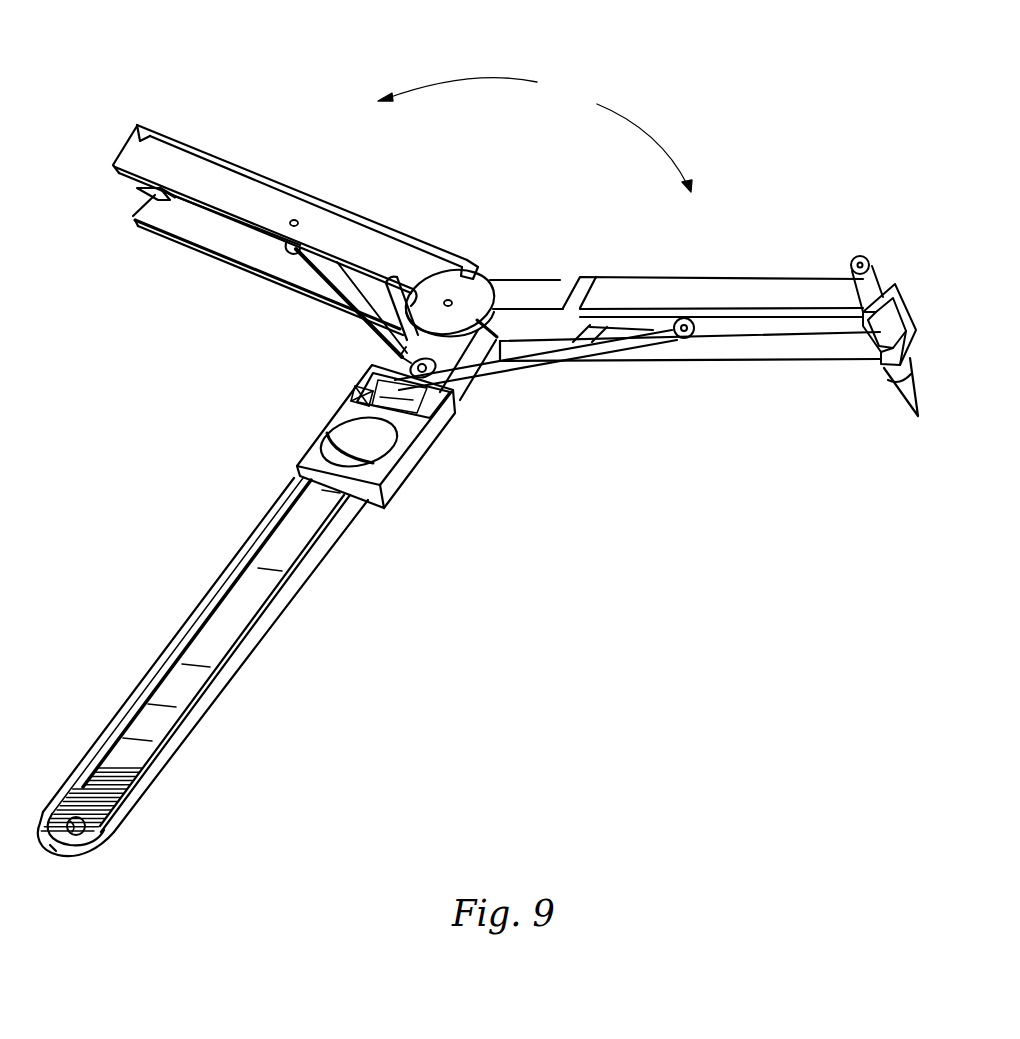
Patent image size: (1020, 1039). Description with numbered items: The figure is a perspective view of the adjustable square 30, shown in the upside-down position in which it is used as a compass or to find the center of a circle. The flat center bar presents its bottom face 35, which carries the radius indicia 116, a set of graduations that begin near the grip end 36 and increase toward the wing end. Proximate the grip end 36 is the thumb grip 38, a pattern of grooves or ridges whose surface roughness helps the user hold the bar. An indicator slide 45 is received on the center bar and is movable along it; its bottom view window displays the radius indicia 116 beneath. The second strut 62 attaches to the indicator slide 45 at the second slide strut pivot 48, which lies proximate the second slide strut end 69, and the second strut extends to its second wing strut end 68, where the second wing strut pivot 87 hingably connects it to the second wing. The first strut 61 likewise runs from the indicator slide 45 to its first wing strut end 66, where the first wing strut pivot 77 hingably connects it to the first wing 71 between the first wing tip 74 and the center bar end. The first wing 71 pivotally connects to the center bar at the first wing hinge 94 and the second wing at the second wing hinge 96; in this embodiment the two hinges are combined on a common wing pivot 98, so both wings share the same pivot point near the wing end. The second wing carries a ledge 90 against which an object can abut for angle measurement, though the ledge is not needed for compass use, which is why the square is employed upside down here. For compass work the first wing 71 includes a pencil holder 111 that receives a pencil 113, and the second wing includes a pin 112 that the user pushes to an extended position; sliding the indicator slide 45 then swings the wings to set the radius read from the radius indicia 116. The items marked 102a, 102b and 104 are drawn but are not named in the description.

The adjustable square 30 is at (205, 400).
The bottom face 35 is at (284, 556).
The grip end 36 is at (62, 858).
The thumb grip 38 is at (133, 773).
The indicator slide 45 is at (312, 457).
The second slide strut pivot 48 is at (398, 358).
The first strut 61 is at (553, 355).
The second strut 62 is at (307, 262).
The first wing strut end 66 is at (657, 342).
The second wing strut end 68 is at (310, 262).
The second slide strut end 69 is at (406, 353).
The first wing 71 is at (703, 293).
The first wing tip 74 is at (130, 157).
The first wing strut pivot 77 is at (693, 338).
The second wing strut pivot 87 is at (296, 221).
The ledge 90 is at (152, 138).
The first wing hinge 94 is at (449, 300).
The second wing hinge 96 is at (493, 290).
The common wing pivot 98 is at (467, 295).
The pivot joint 102a is at (366, 395).
The pivot joint 102b is at (441, 400).
The rotation direction 104 is at (535, 135).
The pencil holder 111 is at (888, 294).
The pin 112 is at (140, 222).
The pencil 113 is at (874, 298).
The radius indicia 116 is at (260, 570).